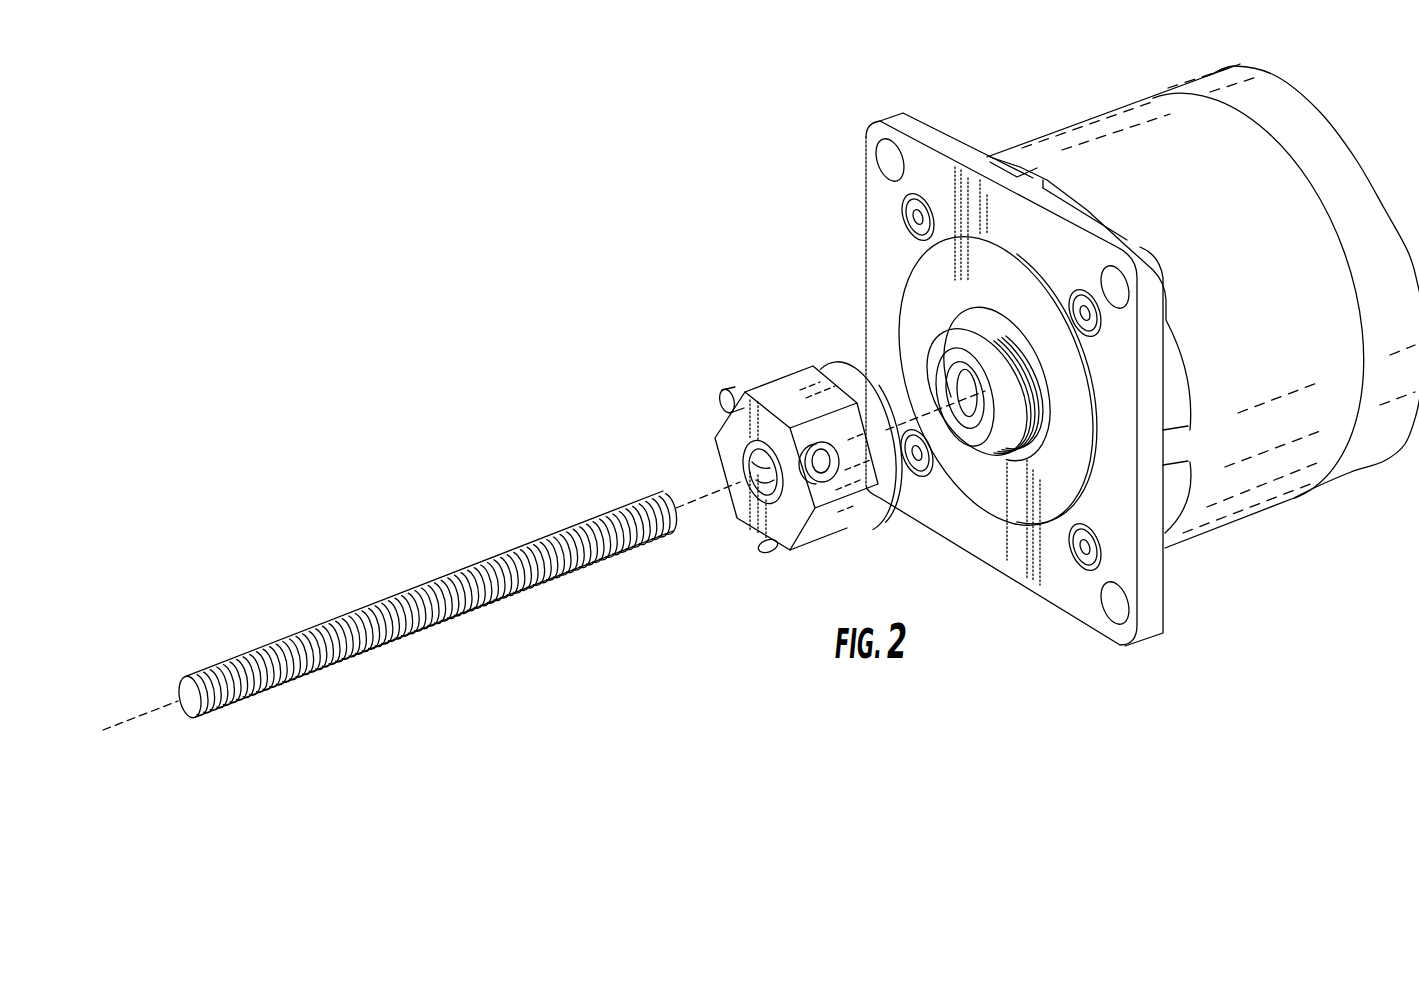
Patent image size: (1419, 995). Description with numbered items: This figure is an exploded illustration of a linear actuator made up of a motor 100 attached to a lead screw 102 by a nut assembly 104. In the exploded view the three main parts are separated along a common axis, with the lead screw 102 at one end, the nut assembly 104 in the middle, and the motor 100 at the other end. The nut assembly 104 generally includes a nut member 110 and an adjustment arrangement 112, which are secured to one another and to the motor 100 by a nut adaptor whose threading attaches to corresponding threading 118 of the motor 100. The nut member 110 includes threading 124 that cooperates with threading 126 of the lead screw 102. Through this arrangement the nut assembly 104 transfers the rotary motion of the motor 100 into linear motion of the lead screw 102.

The motor 100 is at (782, 152).
The lead screw 102 is at (433, 528).
The nut assembly 104 is at (746, 344).
The nut member 110 is at (752, 462).
The adjustment arrangement 112 is at (783, 338).
The threading 118 is at (995, 340).
The threading 124 is at (760, 487).
The threading 126 is at (428, 620).